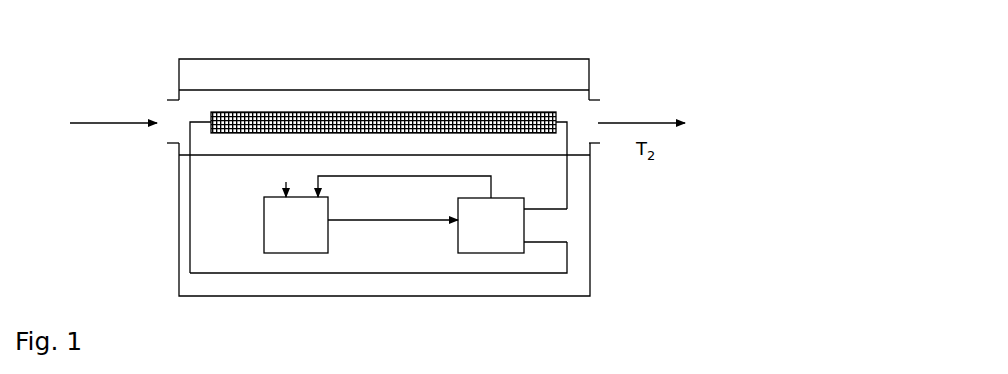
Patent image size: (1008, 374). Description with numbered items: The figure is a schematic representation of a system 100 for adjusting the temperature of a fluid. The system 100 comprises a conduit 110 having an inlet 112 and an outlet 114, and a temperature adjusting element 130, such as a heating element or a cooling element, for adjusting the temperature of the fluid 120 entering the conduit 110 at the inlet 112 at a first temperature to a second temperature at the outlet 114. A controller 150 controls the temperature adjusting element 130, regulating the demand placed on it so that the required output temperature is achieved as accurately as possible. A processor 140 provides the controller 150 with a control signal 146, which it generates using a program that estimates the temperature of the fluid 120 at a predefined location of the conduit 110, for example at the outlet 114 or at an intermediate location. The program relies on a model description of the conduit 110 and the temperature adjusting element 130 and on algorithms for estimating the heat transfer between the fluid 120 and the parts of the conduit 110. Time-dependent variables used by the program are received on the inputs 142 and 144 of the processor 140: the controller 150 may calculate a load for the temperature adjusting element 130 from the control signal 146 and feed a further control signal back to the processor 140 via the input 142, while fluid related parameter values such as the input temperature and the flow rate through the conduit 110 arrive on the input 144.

The system 100 is at (399, 330).
The conduit 110 is at (463, 127).
The inlet 112 is at (167, 111).
The outlet 114 is at (598, 111).
The fluid 120 is at (88, 112).
The temperature adjusting element 130 is at (513, 100).
The processor 140 is at (296, 225).
The input 142 is at (404, 188).
The input 144 is at (272, 180).
The control signal 146 is at (393, 234).
The controller 150 is at (512, 225).